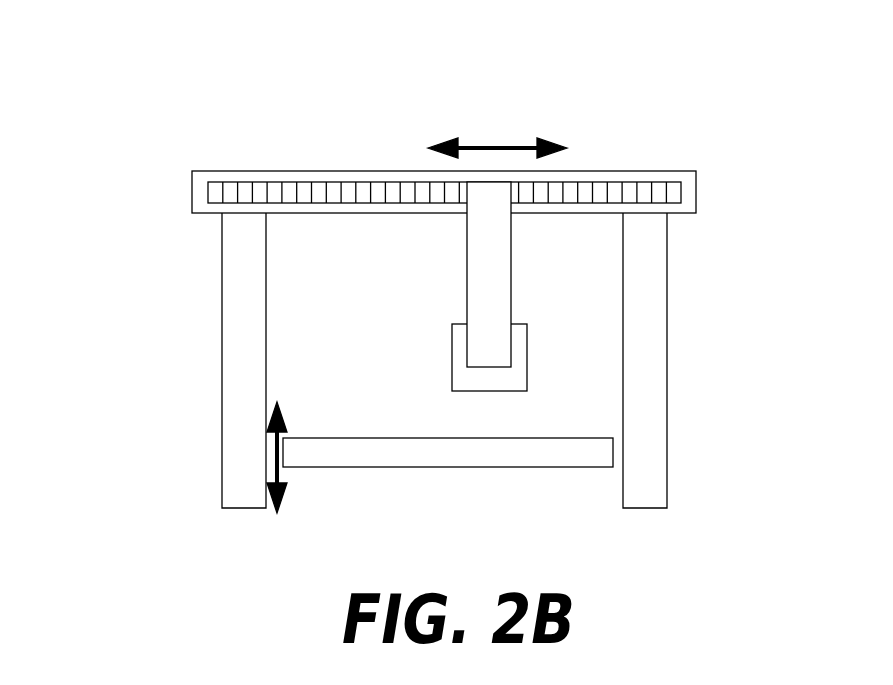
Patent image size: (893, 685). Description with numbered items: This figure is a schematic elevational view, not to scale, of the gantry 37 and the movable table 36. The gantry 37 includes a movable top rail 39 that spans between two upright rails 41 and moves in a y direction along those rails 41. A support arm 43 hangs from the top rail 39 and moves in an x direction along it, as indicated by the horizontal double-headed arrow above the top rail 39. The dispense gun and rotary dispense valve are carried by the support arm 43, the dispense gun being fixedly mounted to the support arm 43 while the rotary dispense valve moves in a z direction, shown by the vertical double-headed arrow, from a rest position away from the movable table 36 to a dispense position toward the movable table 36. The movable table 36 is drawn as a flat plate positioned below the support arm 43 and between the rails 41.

The gantry 37 is at (158, 149).
The movable top rail 39 is at (290, 176).
The support arm 43 is at (511, 258).
The rails 41 is at (226, 311).
The movable table 36 is at (492, 452).